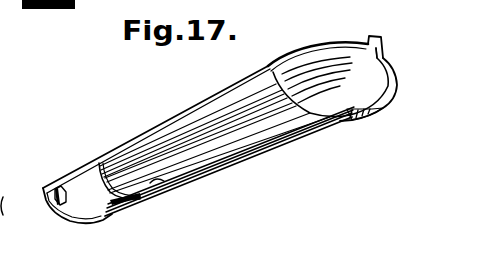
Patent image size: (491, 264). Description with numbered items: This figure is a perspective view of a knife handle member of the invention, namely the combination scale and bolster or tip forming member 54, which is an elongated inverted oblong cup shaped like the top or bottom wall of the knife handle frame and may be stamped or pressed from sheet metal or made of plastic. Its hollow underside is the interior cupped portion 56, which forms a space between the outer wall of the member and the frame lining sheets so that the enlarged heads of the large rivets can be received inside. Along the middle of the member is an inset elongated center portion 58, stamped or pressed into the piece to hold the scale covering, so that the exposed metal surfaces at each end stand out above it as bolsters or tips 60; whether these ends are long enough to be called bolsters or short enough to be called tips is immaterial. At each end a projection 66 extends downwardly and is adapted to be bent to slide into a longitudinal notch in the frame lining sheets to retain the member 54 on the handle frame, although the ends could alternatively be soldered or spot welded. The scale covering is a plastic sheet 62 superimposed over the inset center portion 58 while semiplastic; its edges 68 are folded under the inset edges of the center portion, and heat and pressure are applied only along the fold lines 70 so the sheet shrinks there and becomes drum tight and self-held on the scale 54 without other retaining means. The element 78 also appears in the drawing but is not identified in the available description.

The combination scale and bolster or tip forming member 54 is at (348, 38).
The interior cupped portion 56 is at (99, 162).
The inset elongated center portion 58 is at (264, 68).
The bolsters or tips 60 is at (120, 211).
The plastic sheet 62 is at (262, 152).
The projection 66 is at (56, 205).
The edges of the plastic sheet 68 is at (147, 147).
The fold lines 70 is at (177, 113).
The adjacent member 78 is at (0, 7).